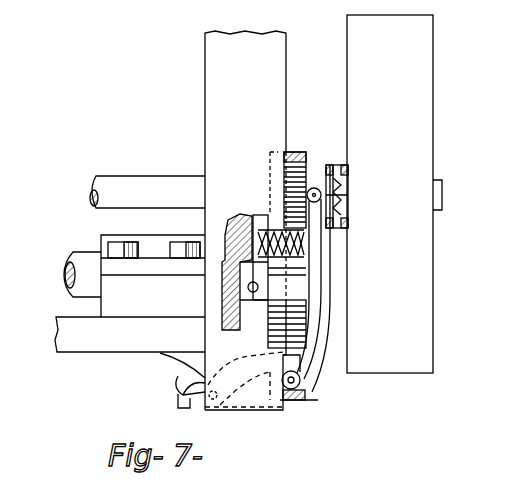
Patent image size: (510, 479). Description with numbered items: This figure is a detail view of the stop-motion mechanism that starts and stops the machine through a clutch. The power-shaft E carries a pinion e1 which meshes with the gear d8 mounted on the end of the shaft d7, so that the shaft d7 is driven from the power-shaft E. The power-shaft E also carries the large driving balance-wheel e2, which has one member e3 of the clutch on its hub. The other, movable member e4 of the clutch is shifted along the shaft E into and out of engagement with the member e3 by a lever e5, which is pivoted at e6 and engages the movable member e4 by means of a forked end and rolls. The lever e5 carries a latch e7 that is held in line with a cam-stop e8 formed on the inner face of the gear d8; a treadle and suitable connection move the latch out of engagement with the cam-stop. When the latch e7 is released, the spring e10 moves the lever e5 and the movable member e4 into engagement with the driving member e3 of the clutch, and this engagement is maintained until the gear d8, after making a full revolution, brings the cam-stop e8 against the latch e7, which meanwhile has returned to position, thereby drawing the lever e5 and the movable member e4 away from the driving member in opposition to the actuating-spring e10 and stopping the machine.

The power-shaft E is at (147, 192).
The shaft d7 is at (62, 278).
The gear d8 is at (320, 402).
The pinion e1 is at (296, 151).
The driving balance-wheel e2 is at (394, 194).
The clutch member e3 is at (348, 190).
The movable clutch member e4 is at (337, 180).
The lever e5 is at (323, 302).
The pivot e6 is at (290, 400).
The latch e7 is at (243, 287).
The cam-stop e8 is at (227, 258).
The spring e10 is at (283, 262).